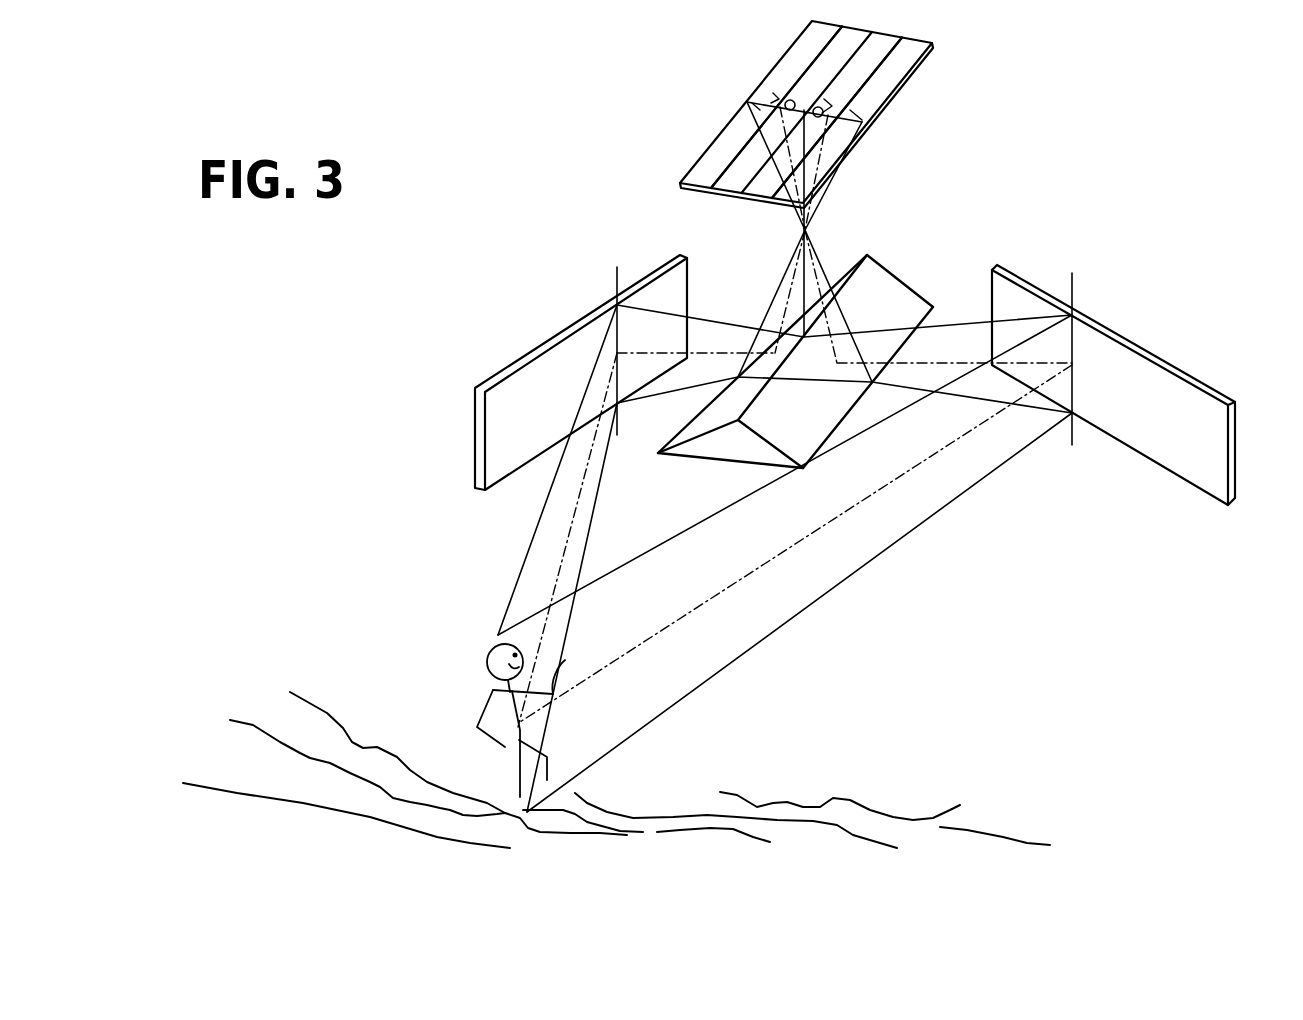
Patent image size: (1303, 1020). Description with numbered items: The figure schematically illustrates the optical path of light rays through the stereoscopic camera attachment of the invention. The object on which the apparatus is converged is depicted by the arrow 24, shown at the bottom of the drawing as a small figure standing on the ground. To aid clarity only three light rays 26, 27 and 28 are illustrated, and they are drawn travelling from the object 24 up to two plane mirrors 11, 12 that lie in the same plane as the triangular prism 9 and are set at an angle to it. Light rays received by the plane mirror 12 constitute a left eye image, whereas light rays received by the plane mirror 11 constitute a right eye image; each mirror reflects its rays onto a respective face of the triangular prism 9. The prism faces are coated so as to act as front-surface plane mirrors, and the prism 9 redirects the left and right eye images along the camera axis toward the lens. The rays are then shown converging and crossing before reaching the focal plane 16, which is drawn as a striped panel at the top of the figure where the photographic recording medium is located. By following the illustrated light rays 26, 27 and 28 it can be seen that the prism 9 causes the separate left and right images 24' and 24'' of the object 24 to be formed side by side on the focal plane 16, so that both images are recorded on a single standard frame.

The triangular prism 9 is at (820, 420).
The plane mirror 11 is at (579, 360).
The plane mirror 12 is at (1113, 385).
The focal plane 16 is at (704, 194).
The object 24 is at (563, 720).
The left image 24' is at (761, 108).
The right image 24'' is at (874, 118).
The light ray 26 is at (702, 527).
The light ray 27 is at (814, 538).
The light ray 28 is at (790, 623).